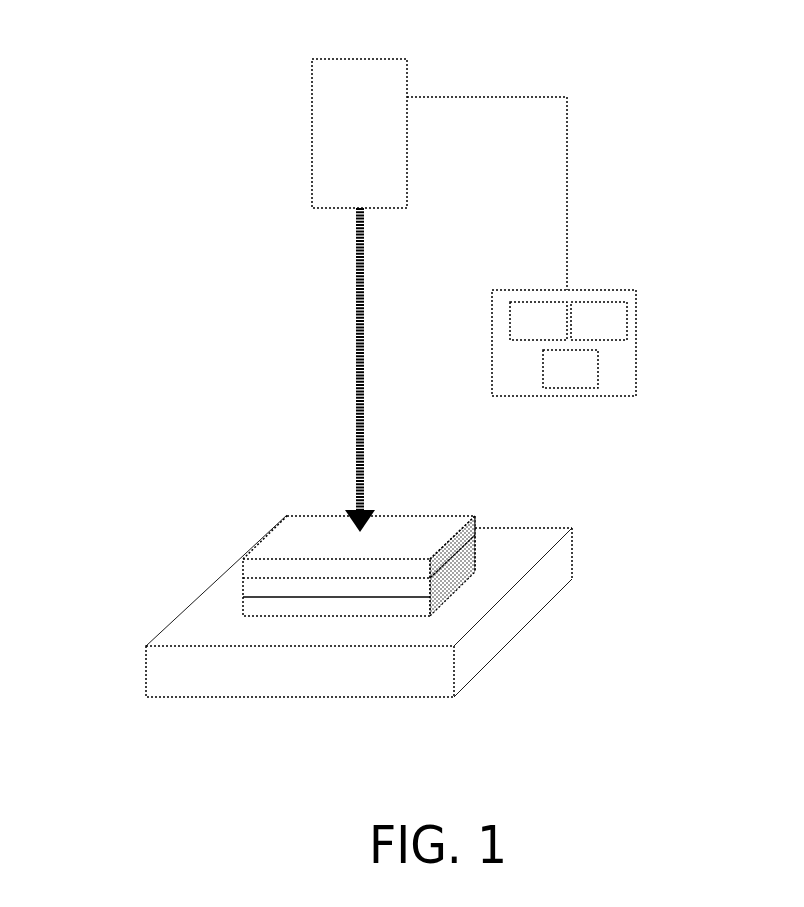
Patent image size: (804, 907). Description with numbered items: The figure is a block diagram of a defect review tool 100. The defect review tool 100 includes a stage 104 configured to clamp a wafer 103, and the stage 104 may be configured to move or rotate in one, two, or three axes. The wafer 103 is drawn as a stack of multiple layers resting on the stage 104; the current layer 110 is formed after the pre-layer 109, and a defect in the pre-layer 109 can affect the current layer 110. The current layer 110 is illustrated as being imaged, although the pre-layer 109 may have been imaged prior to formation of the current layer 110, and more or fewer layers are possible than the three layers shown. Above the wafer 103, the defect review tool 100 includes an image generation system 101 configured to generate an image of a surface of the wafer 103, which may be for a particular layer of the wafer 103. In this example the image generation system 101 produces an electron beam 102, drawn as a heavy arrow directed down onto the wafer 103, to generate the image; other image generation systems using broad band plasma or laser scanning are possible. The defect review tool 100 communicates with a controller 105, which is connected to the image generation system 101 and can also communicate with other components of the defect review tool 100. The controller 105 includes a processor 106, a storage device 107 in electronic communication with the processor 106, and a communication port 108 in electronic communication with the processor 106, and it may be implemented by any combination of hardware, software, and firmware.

The defect review tool 100 is at (258, 95).
The image generation system 101 is at (341, 144).
The electron beam 102 is at (363, 268).
The wafer 103 is at (405, 567).
The stage 104 is at (213, 690).
The controller 105 is at (596, 315).
The processor 106 is at (557, 333).
The storage device 107 is at (618, 333).
The communication port 108 is at (589, 381).
The pre-layer 109 is at (445, 595).
The current layer 110 is at (453, 545).